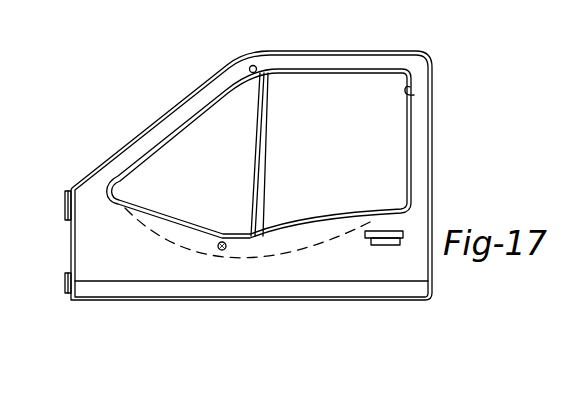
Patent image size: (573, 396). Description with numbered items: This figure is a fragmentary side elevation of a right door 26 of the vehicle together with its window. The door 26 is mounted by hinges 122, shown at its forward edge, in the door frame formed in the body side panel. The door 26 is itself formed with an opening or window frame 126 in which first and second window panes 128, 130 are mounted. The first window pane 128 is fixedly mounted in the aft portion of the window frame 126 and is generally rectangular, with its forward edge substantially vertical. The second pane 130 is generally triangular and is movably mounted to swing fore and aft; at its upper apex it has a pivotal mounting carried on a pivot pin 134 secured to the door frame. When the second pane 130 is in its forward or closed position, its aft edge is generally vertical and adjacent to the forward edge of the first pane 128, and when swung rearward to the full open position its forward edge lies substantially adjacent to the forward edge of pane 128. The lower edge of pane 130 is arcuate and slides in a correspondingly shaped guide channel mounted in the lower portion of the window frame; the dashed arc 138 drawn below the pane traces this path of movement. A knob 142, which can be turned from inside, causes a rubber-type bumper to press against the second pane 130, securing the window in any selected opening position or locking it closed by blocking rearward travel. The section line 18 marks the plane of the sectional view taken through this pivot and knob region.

The section line 18- 18 is at (258, 55).
The door 26 is at (122, 306).
The hinges 122 is at (65, 204).
The window frame 126 is at (414, 95).
The first window pane 128 is at (370, 100).
The second window pane 130 is at (214, 168).
The pivot pin 134 is at (252, 66).
The dashed arc / glass path 138 is at (205, 240).
The knob 142 is at (224, 241).